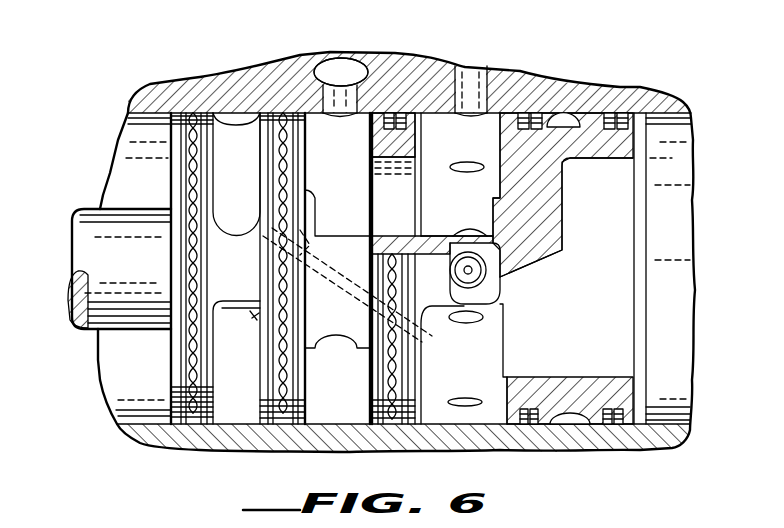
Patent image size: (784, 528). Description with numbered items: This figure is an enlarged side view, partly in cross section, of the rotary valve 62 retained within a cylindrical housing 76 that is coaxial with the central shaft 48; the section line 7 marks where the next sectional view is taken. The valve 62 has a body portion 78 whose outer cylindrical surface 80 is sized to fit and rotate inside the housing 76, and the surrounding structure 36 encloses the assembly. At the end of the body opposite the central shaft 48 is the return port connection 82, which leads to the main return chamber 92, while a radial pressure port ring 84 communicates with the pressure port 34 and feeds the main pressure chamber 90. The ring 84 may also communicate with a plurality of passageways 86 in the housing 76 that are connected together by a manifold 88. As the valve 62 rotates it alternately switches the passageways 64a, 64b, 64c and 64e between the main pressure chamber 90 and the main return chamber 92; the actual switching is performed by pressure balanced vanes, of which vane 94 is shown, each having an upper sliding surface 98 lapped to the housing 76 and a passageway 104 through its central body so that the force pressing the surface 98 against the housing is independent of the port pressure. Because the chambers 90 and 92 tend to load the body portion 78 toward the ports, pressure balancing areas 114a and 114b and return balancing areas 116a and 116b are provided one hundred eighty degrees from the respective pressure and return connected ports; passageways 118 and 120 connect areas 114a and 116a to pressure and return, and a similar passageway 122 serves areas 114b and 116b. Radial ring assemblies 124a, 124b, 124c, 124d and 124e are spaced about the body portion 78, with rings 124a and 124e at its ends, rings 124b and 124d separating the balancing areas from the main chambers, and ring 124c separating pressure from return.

The section line of FIG. 7 is at (445, 35).
The pressure port 34 is at (351, 86).
The valve housing 36 is at (683, 236).
The central shaft 48 is at (70, 246).
The rotary valve 62 is at (583, 84).
The passageway 64a is at (460, 324).
The passageway 64b is at (450, 167).
The passageway 64c is at (455, 231).
The passageway 64e is at (447, 404).
The cylindrical housing 76 is at (127, 401).
The body portion 78 is at (663, 175).
The outer cylindrical surface 80 is at (211, 84).
The return port connection 82 is at (620, 331).
The radial pressure port ring 84 is at (320, 133).
The passageways 86 is at (353, 130).
The manifold 88 is at (338, 71).
The main pressure chamber 90 is at (445, 191).
The main return chamber 92 is at (570, 368).
The pressure balanced vane 94 is at (477, 278).
The upper sliding surface 98 is at (482, 292).
The passageway 104 is at (472, 271).
The pressure balancing area 114a is at (500, 268).
The pressure balancing area 114b is at (590, 425).
The return balancing area 116a is at (253, 154).
The return balancing area 116b is at (605, 110).
The passageway 118 is at (257, 303).
The passageway 120 is at (340, 266).
The passageway 122 is at (572, 128).
The radial ring assembly 124a is at (193, 373).
The radial ring assembly 124b is at (260, 427).
The radial ring assembly 124c is at (387, 426).
The radial ring assembly 124d is at (530, 425).
The radial ring assembly 124e is at (616, 425).